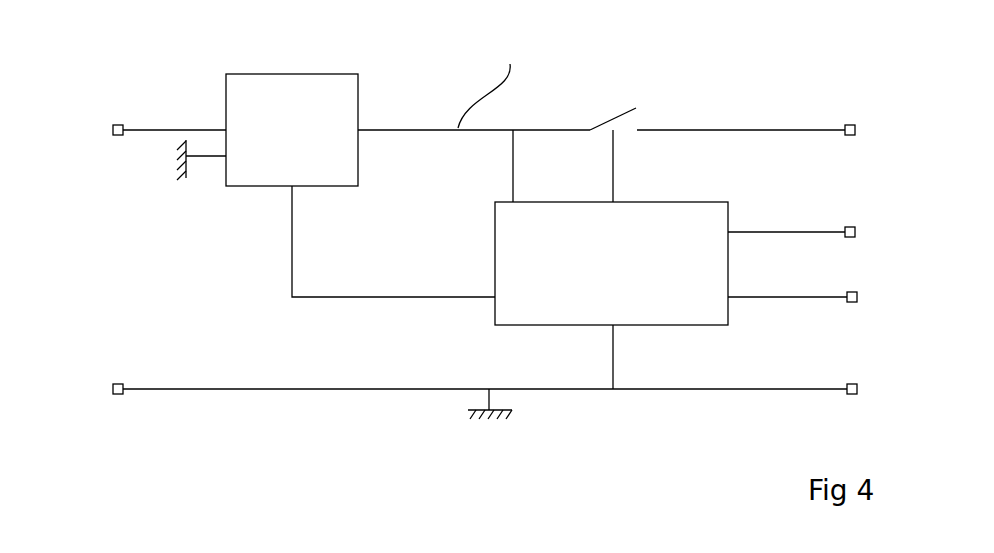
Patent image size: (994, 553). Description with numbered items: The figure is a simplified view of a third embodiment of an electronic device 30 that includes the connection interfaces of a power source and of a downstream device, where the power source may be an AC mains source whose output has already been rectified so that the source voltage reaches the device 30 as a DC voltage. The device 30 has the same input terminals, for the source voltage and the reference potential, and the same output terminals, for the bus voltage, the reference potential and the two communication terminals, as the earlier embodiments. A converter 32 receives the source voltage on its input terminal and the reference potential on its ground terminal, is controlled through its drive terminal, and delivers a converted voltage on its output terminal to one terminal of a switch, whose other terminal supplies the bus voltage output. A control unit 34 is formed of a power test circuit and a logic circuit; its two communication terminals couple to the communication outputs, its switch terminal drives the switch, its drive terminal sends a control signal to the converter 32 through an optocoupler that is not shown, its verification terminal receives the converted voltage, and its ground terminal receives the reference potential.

The electronic device 30 is at (173, 80).
The converter 32 is at (345, 83).
The control unit 34 is at (707, 202).